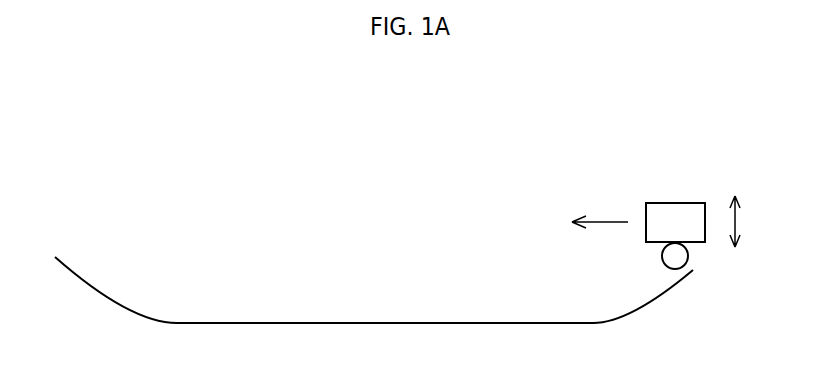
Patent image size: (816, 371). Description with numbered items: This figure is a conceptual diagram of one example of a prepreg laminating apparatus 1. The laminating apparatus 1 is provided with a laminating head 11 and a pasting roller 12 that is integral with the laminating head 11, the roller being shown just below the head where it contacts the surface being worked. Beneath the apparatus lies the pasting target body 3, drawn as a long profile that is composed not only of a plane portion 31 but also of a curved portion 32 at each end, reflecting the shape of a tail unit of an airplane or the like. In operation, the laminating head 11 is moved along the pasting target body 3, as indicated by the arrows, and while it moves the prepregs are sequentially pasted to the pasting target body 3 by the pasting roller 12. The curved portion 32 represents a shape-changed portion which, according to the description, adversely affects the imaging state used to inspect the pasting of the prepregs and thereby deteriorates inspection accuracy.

The laminating apparatus 1 is at (668, 205).
The laminating head 11 is at (685, 215).
The pasting roller 12 is at (681, 254).
The pasting target body 3 is at (385, 297).
The plane portion 31 is at (392, 322).
The curved portion 32 is at (90, 288).